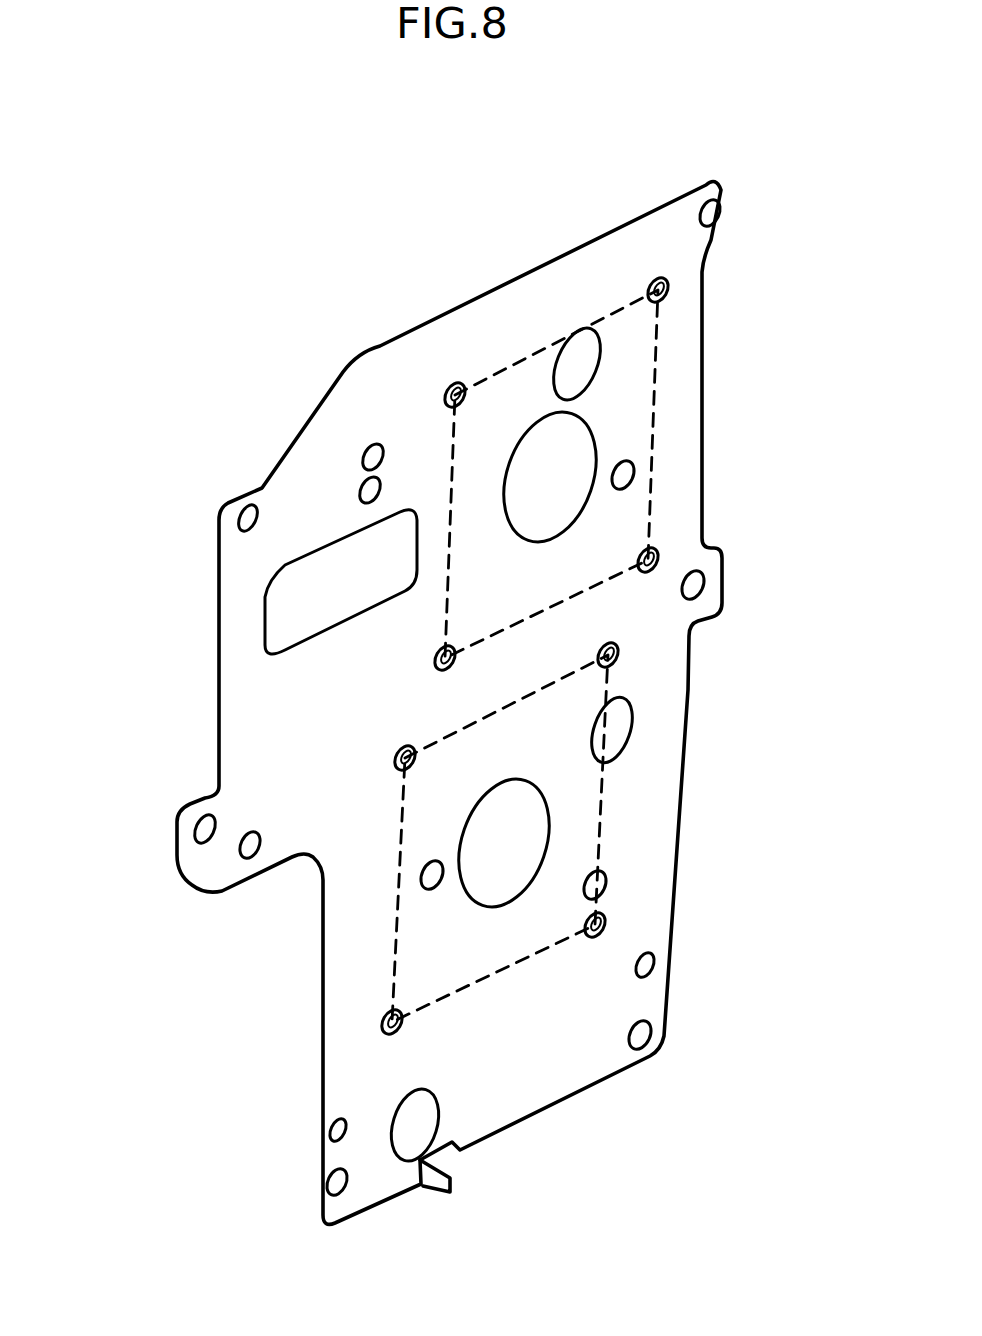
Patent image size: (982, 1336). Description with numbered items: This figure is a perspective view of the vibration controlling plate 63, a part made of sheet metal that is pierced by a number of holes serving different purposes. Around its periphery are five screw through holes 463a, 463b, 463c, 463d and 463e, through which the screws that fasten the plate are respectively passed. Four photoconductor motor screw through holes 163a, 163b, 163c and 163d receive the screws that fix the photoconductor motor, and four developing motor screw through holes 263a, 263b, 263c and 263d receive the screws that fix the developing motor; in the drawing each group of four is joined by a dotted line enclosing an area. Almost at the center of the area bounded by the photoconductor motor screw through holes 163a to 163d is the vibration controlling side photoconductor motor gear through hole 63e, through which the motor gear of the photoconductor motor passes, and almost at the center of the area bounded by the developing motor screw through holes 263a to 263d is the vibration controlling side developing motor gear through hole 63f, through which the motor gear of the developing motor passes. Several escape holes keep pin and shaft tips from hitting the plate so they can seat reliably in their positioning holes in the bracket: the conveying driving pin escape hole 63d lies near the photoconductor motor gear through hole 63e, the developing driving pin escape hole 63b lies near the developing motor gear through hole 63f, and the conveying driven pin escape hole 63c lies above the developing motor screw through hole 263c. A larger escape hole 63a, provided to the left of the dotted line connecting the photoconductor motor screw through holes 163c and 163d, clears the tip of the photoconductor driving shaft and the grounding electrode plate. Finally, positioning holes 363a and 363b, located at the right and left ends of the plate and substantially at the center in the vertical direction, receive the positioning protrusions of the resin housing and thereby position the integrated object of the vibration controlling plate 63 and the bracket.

The vibration controlling plate 63 is at (521, 194).
The escape hole 63a is at (272, 630).
The developing driving pin escape hole 63b is at (432, 868).
The conveying driven pin escape hole 63c is at (598, 875).
The conveying driving pin escape hole 63d is at (632, 472).
The vibration controlling side photoconductor motor gear through hole 63e is at (590, 440).
The vibration controlling side developing motor gear through hole 63f is at (537, 808).
The photoconductor motor screw through hole 163a is at (667, 278).
The photoconductor motor screw through hole 163b is at (640, 563).
The photoconductor motor screw through hole 163c is at (440, 653).
The photoconductor motor screw through hole 163d is at (448, 384).
The developing motor screw through hole 263a is at (615, 655).
The developing motor screw through hole 263b is at (592, 938).
The developing motor screw through hole 263c is at (398, 1026).
The developing motor screw through hole 263d is at (405, 755).
The positioning hole 363a is at (195, 832).
The positioning hole 363b is at (712, 584).
The screw through hole 463a is at (728, 195).
The screw through hole 463b is at (655, 1032).
The screw through hole 463c is at (335, 1128).
The screw through hole 463d is at (252, 858).
The screw through hole 463e is at (230, 503).